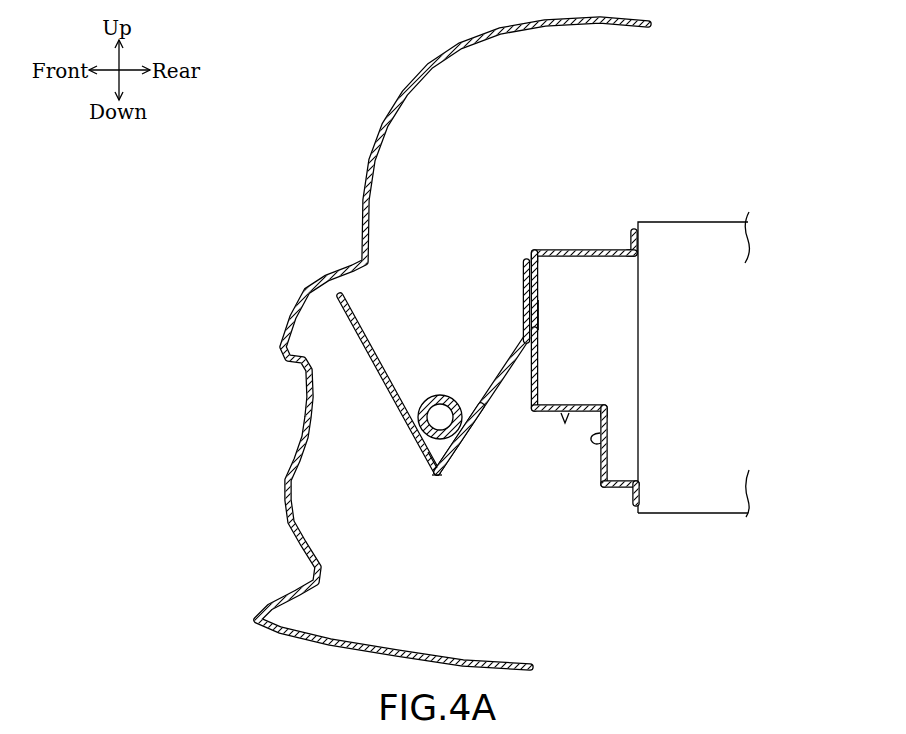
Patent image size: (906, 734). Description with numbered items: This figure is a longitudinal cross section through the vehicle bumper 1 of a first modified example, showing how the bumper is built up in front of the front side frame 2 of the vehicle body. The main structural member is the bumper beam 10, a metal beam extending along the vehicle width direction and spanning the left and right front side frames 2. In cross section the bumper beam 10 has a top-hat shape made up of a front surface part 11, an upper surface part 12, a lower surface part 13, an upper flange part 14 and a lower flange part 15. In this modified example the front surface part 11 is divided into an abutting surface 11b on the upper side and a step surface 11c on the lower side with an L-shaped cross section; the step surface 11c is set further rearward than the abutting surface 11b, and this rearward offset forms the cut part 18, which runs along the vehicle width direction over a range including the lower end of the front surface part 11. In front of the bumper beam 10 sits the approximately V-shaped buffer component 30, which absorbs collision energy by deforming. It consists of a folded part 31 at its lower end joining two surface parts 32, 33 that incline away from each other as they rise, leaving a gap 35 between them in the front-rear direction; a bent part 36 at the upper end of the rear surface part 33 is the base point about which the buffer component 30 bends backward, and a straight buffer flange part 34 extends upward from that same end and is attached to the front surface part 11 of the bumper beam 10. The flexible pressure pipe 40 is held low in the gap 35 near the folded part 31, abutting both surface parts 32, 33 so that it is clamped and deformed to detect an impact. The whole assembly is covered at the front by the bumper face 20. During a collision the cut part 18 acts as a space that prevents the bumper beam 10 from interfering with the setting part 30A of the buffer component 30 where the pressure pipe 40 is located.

The vehicle bumper 1 is at (259, 64).
The front side frame 2 is at (703, 222).
The bumper beam 10 is at (536, 241).
The front surface part 11 is at (538, 287).
The abutting surface 11b is at (539, 356).
The step surface 11c is at (569, 413).
The upper surface part 12 is at (590, 251).
The lower surface part 13 is at (615, 490).
The upper flange part 14 is at (637, 240).
The lower flange part 15 is at (641, 499).
The cut part 18 is at (607, 431).
The bumper face 20 is at (307, 403).
The buffer component 30 is at (390, 428).
The setting part 30A is at (462, 438).
The folded part 31 is at (440, 478).
The surface part 32 is at (389, 389).
The surface part 33 is at (480, 413).
The buffer flange part 34 is at (523, 306).
The gap 35 is at (424, 382).
The bent part 36 is at (539, 317).
The pressure pipe 40 is at (443, 450).